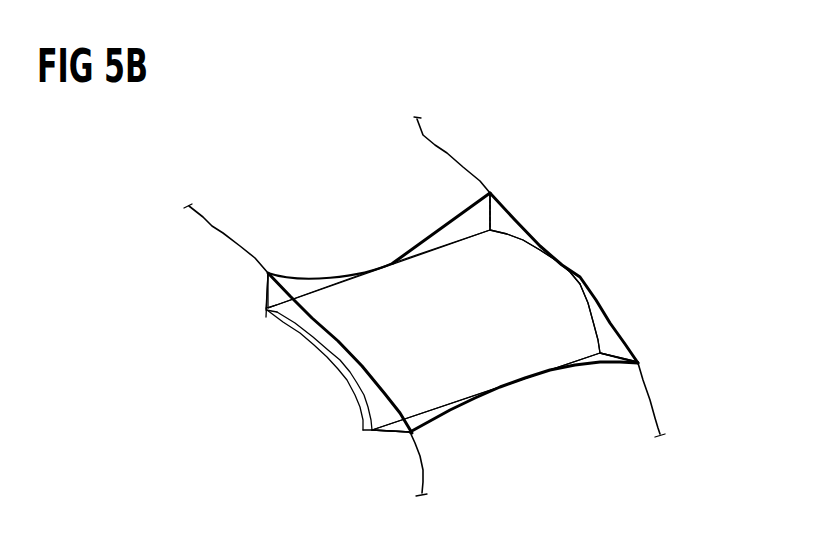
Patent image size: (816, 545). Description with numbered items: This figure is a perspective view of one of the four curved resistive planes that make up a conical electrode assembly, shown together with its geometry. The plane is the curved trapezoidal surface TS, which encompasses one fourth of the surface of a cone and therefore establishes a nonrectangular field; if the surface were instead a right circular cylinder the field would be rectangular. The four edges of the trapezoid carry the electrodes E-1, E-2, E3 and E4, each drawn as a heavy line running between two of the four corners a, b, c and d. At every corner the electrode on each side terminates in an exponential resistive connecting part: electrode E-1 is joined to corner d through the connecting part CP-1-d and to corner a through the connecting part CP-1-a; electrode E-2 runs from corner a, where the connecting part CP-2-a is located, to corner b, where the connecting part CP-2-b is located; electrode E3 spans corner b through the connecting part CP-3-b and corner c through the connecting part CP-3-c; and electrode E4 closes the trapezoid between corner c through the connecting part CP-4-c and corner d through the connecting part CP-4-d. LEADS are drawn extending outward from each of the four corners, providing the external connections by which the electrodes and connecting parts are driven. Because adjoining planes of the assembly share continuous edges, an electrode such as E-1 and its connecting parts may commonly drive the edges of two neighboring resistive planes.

The leads LEADS is at (424, 309).
The curved trapezoidal surface TS is at (467, 328).
The electrode E-1 is at (393, 263).
The electrode E-2 is at (580, 276).
The electrode E3 is at (515, 386).
The electrode E4 is at (337, 344).
The corner a is at (491, 230).
The corner b is at (603, 351).
The corner c is at (364, 430).
The corner d is at (267, 315).
The exponential resistive connecting part CP-1-d is at (294, 294).
The exponential resistive connecting part CP-1-a is at (475, 223).
The exponential resistive connecting part CP-2-a is at (505, 223).
The exponential resistive connecting part CP-2-b is at (607, 335).
The exponential resistive connecting part CP-3-b is at (597, 364).
The exponential resistive connecting part CP-3-c is at (420, 418).
The exponential resistive connecting part CP-4-c is at (378, 417).
The exponential resistive connecting part CP-4-d is at (275, 310).